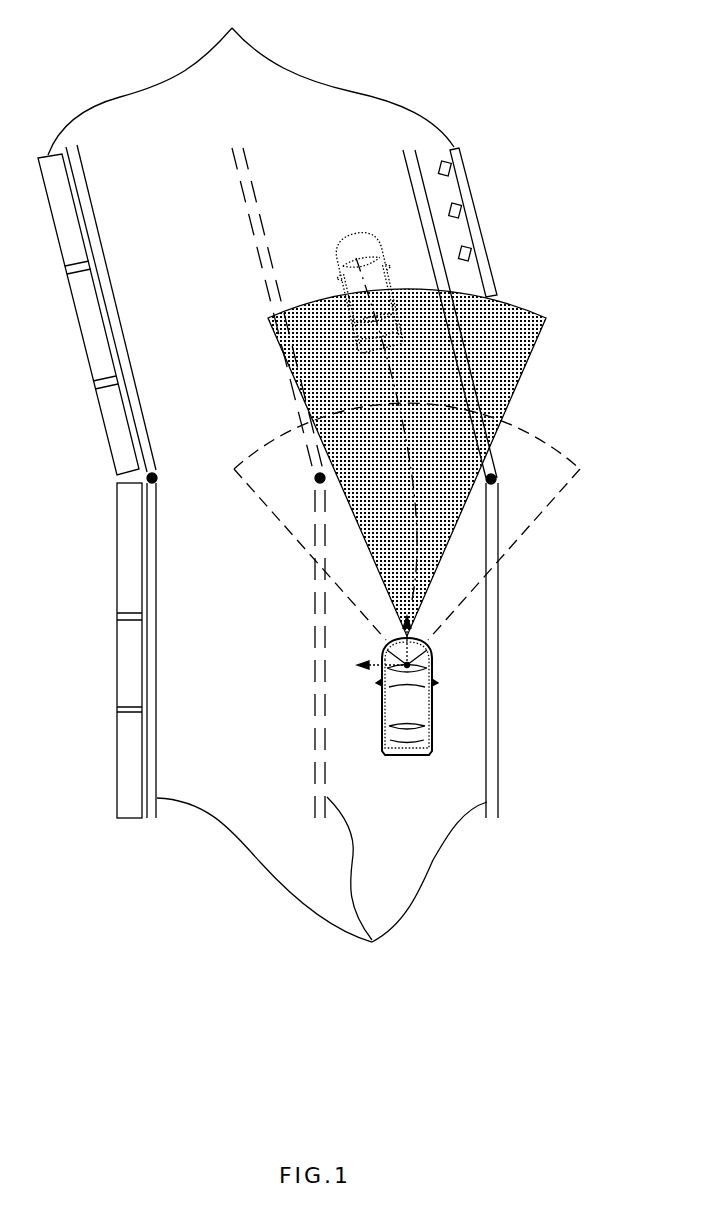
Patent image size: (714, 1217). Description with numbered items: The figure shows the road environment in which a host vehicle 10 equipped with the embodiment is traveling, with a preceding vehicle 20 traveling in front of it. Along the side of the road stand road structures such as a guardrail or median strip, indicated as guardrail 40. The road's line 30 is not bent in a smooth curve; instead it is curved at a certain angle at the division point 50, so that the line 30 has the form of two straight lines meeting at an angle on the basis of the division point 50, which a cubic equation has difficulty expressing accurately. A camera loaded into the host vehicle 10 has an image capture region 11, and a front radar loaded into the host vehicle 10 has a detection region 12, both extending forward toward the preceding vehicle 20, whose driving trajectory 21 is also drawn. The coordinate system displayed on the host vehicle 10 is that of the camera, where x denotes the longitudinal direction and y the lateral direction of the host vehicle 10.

The host vehicle 10 is at (403, 757).
The image capture region of a camera 11 is at (555, 445).
The detection region of a front radar 12 is at (518, 345).
The preceding vehicle 20 is at (347, 233).
The driving trajectory of the preceding vehicle 21 is at (390, 374).
The line 30 is at (322, 884).
The guardrail 40 is at (251, 80).
The division point 50 is at (491, 478).